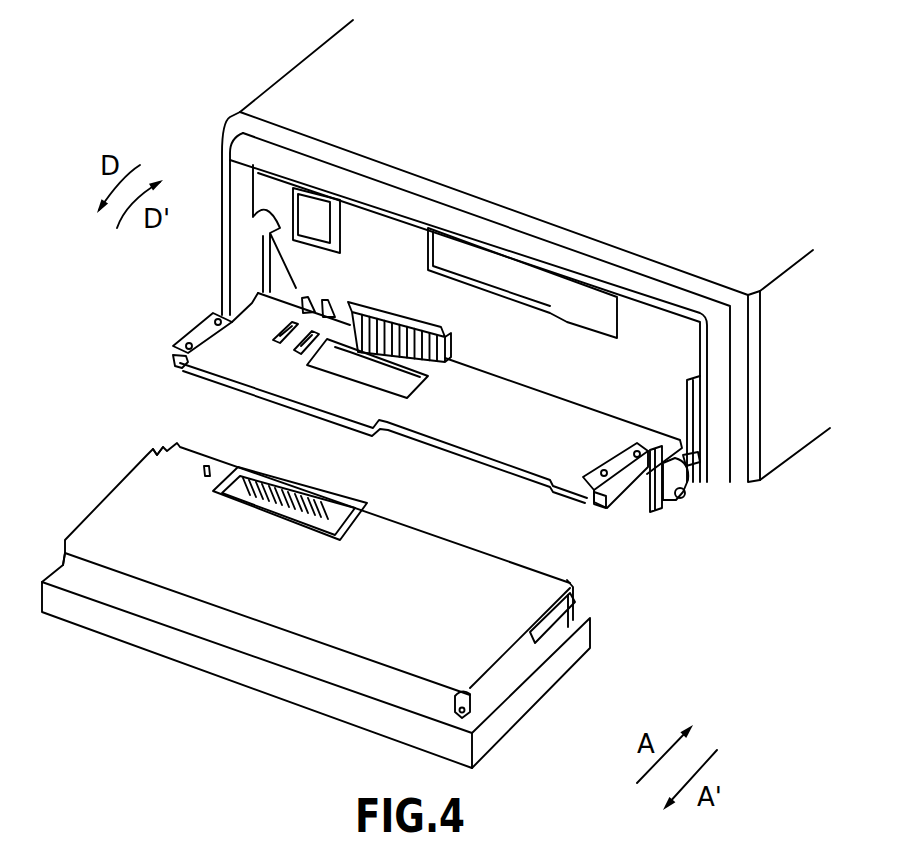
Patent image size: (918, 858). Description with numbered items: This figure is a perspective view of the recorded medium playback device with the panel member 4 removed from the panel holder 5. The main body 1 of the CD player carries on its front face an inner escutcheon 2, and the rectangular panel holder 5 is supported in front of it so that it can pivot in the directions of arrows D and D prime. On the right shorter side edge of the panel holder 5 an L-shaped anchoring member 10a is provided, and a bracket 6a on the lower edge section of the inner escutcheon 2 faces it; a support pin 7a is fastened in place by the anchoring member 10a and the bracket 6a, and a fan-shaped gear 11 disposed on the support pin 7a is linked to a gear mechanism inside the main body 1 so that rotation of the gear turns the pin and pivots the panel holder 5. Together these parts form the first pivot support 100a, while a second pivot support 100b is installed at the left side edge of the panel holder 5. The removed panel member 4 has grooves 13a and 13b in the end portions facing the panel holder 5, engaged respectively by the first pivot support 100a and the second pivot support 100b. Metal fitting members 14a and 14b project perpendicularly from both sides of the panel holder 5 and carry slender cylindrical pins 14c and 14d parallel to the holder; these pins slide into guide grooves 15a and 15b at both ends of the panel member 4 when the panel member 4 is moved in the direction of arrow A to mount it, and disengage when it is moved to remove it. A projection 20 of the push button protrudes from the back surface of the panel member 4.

The main body 1 is at (333, 49).
The inner escutcheon 2 is at (240, 115).
The panel member 4 is at (357, 713).
The panel holder 5 is at (485, 441).
The bracket 6a is at (686, 490).
The support pin 7a is at (685, 498).
The anchoring member 10a is at (643, 500).
The fan-shaped gear 11 is at (662, 510).
The groove 13a is at (587, 603).
The groove 13b is at (152, 456).
The metal fitting member 14a is at (587, 500).
The metal fitting member 14b is at (172, 356).
The pin 14c is at (607, 508).
The pin 14d is at (173, 368).
The guide groove 15a is at (543, 633).
The guide groove 15b is at (147, 457).
The projection 20 is at (213, 463).
The first pivot support 100a is at (746, 584).
The second pivot support 100b is at (220, 298).